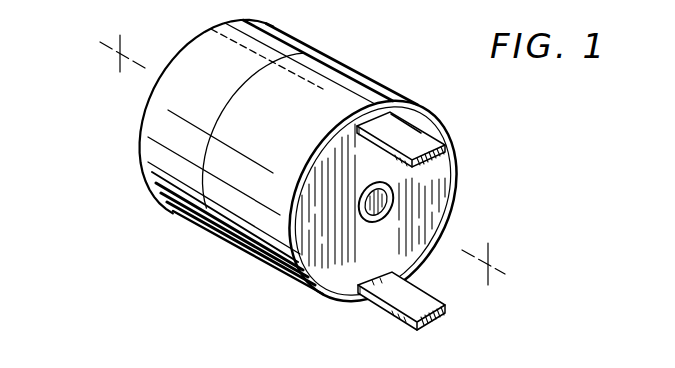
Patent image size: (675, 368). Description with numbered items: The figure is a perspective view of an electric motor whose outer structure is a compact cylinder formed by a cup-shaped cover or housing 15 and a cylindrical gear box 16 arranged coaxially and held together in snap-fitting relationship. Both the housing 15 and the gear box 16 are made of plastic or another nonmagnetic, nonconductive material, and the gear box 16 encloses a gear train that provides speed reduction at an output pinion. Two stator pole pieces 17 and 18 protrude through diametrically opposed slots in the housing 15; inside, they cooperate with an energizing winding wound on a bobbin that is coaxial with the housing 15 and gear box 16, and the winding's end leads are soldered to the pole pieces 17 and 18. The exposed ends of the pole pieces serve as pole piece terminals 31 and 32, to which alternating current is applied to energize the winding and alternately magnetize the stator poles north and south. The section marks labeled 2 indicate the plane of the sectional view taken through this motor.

The housing 15 is at (370, 83).
The gear box 16 is at (297, 39).
The stator pole piece 17 is at (429, 127).
The stator pole piece 18 is at (389, 323).
The pole piece terminal 31 is at (446, 152).
The pole piece terminal 32 is at (434, 326).
The section line 2- 2 is at (110, 60).